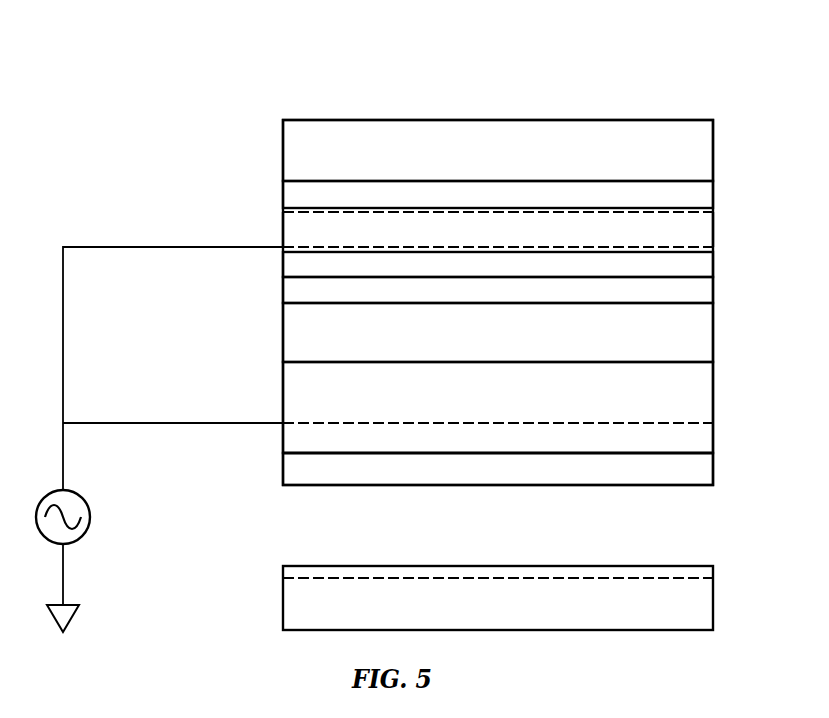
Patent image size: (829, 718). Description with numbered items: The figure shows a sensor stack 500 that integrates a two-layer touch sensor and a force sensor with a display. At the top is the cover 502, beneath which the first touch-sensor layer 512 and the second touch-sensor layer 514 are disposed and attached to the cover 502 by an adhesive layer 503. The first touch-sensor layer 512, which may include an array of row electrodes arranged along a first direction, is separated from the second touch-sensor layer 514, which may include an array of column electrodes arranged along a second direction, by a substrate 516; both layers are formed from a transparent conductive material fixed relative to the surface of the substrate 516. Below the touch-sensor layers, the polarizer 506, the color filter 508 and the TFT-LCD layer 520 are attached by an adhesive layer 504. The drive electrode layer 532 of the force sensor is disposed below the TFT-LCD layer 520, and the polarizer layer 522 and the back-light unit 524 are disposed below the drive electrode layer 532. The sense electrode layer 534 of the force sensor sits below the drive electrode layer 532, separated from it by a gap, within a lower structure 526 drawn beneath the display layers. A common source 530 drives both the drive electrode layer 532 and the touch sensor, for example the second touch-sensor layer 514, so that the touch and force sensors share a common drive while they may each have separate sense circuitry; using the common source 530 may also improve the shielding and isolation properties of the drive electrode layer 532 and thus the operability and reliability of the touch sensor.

The sensor stack 500 is at (191, 50).
The cover 502 is at (714, 154).
The adhesive layer 503 is at (714, 203).
The first touch-sensor layer 512 is at (716, 216).
The substrate 516 is at (714, 233).
The second touch-sensor layer 514 is at (716, 251).
The adhesive layer 504 is at (714, 270).
The polarizer 506 is at (714, 294).
The color filter 508 is at (714, 330).
The TFT-LCD layer 520 is at (714, 396).
The drive electrode layer 532 is at (716, 427).
The polarizer layer 522 is at (714, 445).
The back-light unit 524 is at (714, 472).
The sense electrode layer 534 is at (716, 581).
The rear housing structure 526 is at (714, 606).
The common source 530 is at (90, 517).